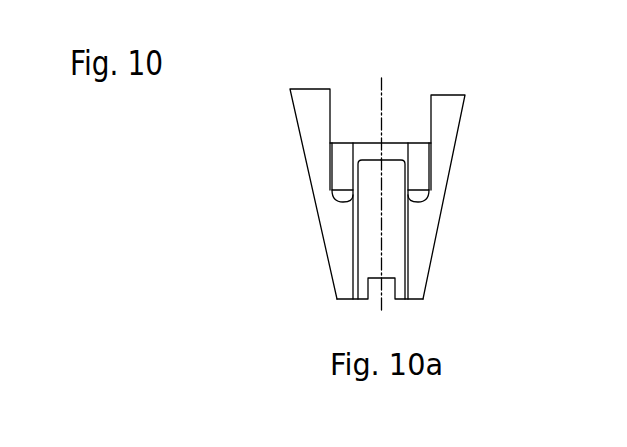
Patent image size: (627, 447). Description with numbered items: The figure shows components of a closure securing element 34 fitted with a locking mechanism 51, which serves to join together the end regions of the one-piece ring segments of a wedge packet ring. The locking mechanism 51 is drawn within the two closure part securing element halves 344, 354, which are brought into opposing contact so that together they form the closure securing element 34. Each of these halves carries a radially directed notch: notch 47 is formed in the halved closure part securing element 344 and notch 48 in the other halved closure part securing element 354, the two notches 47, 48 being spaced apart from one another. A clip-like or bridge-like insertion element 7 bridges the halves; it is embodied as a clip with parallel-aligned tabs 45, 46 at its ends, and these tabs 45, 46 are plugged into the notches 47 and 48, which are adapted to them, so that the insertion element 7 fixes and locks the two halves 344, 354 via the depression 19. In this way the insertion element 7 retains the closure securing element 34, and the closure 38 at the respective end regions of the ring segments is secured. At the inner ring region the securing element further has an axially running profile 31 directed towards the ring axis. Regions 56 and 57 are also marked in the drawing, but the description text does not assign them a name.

The insertion element 7 is at (347, 140).
The depression 19 is at (425, 117).
The axially running profile 31 is at (345, 300).
The closure securing element 34 is at (413, 84).
The closure 38 is at (402, 311).
The tab 45 is at (340, 170).
The tab 46 is at (420, 175).
The notch 47 is at (353, 191).
The notch 48 is at (438, 199).
The locking mechanism 51 is at (363, 137).
The left inner wall 56 is at (380, 237).
The right inner wall 57 is at (388, 220).
The halved closure part securing element 344 is at (330, 230).
The halved closure part securing element 354 is at (427, 230).